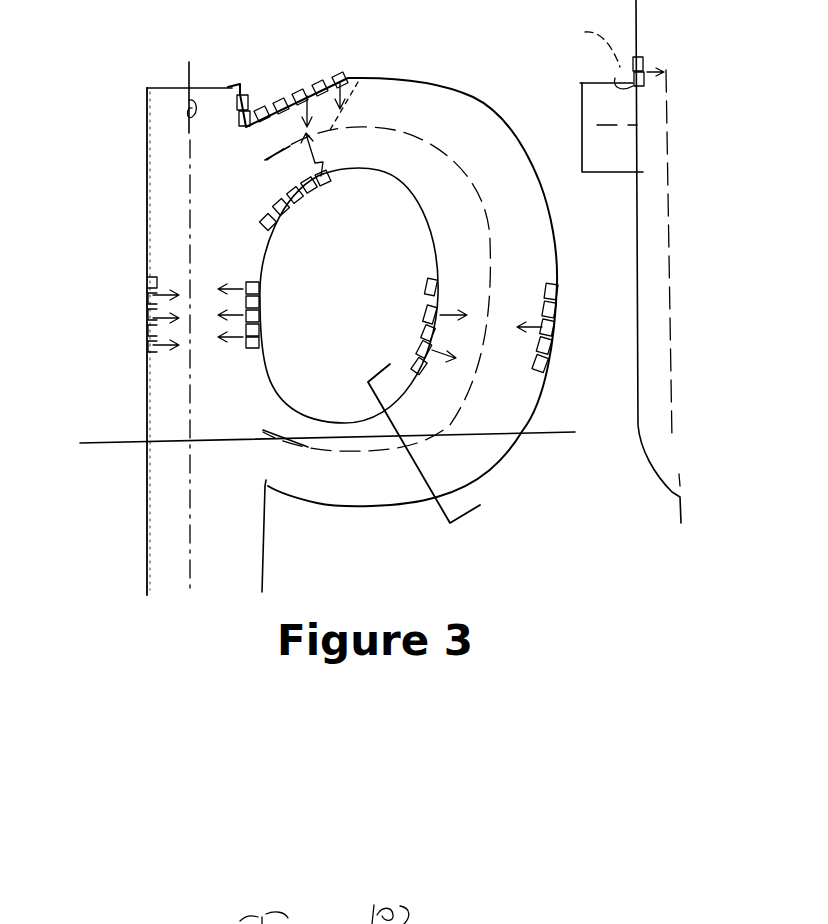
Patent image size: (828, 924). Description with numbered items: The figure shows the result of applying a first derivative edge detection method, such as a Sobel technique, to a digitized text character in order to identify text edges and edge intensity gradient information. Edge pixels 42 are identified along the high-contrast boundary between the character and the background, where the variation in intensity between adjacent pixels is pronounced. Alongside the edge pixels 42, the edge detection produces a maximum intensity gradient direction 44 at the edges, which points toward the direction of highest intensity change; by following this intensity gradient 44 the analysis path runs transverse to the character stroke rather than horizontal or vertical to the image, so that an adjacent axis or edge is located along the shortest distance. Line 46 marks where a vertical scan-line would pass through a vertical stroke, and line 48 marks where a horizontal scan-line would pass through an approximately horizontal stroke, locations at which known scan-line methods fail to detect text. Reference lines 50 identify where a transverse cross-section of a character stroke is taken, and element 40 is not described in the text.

The inlet passage 40 is at (195, 22).
The edge pixels 42 is at (280, 72).
The maximum intensity gradient direction 44 is at (338, 117).
The line 46 is at (192, 115).
The line 48 is at (133, 443).
The reference lines 50 is at (388, 374).